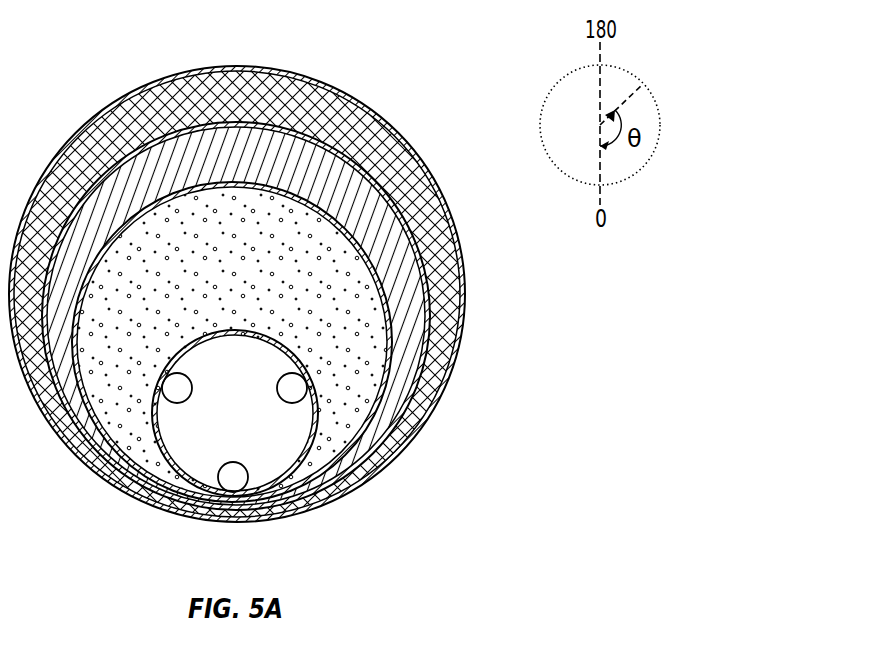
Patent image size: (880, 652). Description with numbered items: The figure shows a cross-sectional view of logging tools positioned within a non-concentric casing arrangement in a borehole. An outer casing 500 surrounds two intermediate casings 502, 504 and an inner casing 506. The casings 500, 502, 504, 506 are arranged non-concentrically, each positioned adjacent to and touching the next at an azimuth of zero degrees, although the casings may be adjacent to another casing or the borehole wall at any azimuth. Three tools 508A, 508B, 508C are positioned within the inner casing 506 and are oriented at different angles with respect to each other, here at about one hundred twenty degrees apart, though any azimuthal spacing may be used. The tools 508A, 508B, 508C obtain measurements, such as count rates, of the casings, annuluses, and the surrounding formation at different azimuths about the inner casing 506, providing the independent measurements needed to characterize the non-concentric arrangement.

The outer casing 500 is at (378, 466).
The casing 502 is at (428, 363).
The casing 504 is at (392, 397).
The inner casing 506 is at (297, 474).
The tool 508A is at (212, 375).
The tool 508B is at (275, 381).
The tool 508C is at (217, 482).